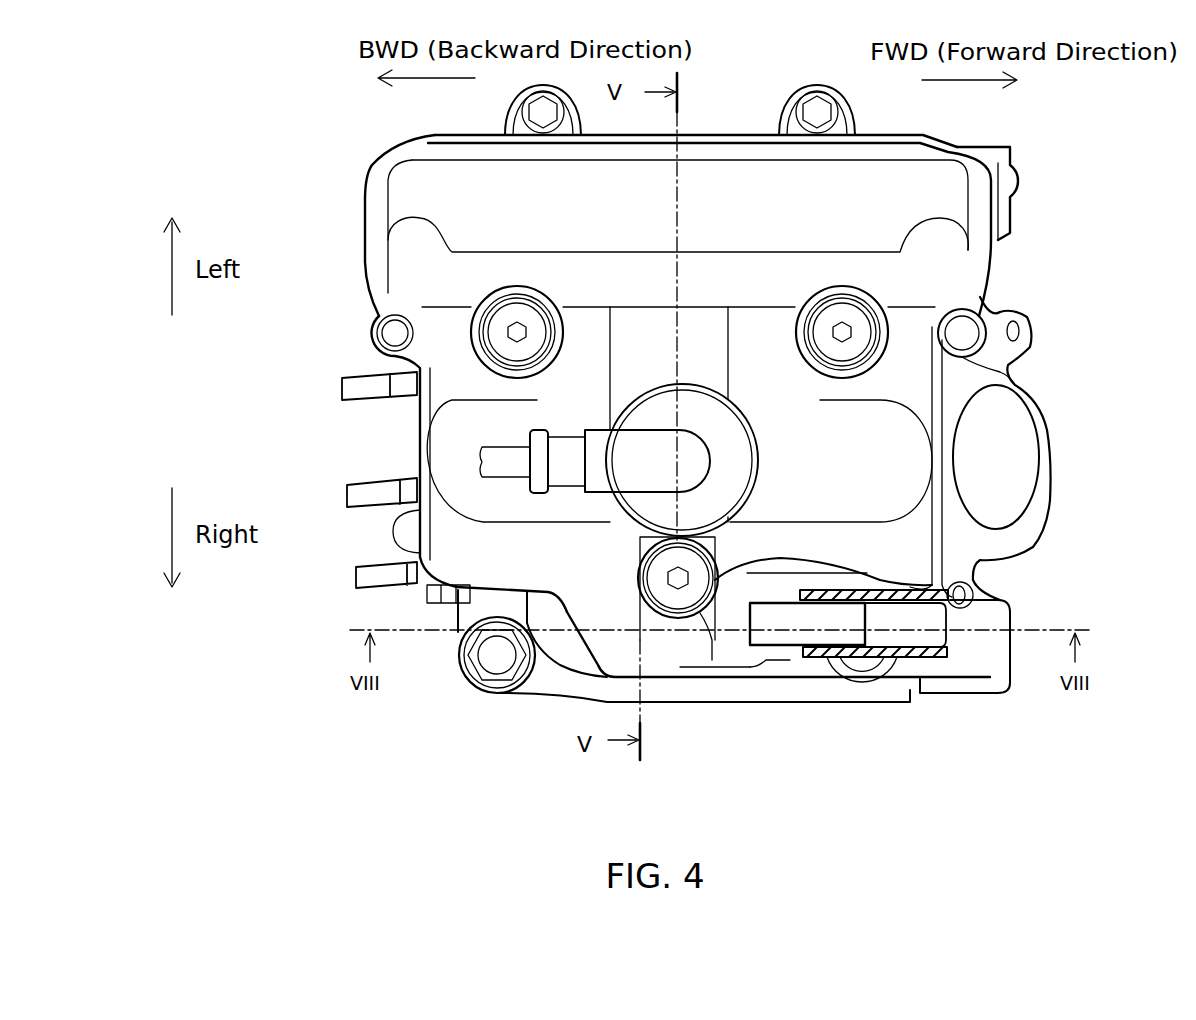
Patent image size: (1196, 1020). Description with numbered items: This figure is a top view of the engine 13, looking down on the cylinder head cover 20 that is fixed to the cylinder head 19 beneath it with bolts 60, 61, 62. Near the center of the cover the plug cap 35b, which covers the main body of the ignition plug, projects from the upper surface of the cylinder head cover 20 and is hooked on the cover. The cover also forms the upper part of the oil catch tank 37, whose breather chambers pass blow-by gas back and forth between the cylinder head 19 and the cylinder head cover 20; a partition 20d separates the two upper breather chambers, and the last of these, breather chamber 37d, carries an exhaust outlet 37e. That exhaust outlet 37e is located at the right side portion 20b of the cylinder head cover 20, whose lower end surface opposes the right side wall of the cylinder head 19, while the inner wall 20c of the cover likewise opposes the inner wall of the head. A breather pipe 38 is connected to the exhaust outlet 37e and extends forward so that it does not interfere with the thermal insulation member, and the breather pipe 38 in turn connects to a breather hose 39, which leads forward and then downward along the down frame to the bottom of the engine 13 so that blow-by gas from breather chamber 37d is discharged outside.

The engine 13 is at (1033, 148).
The cylinder head 19 is at (540, 700).
The cylinder head cover 20 is at (420, 447).
The right side portion 20b is at (763, 668).
The inner wall 20c is at (743, 573).
The partition 20d is at (713, 623).
The plug cap 35b is at (693, 453).
The oil catch tank 37 is at (828, 702).
The breather chamber 37d is at (733, 650).
The exhaust outlet 37e is at (793, 605).
The breather pipe 38 is at (820, 680).
The breather hose 39 is at (927, 657).
The bolt 60 is at (673, 587).
The bolt 61 is at (512, 313).
The bolt 62 is at (843, 313).